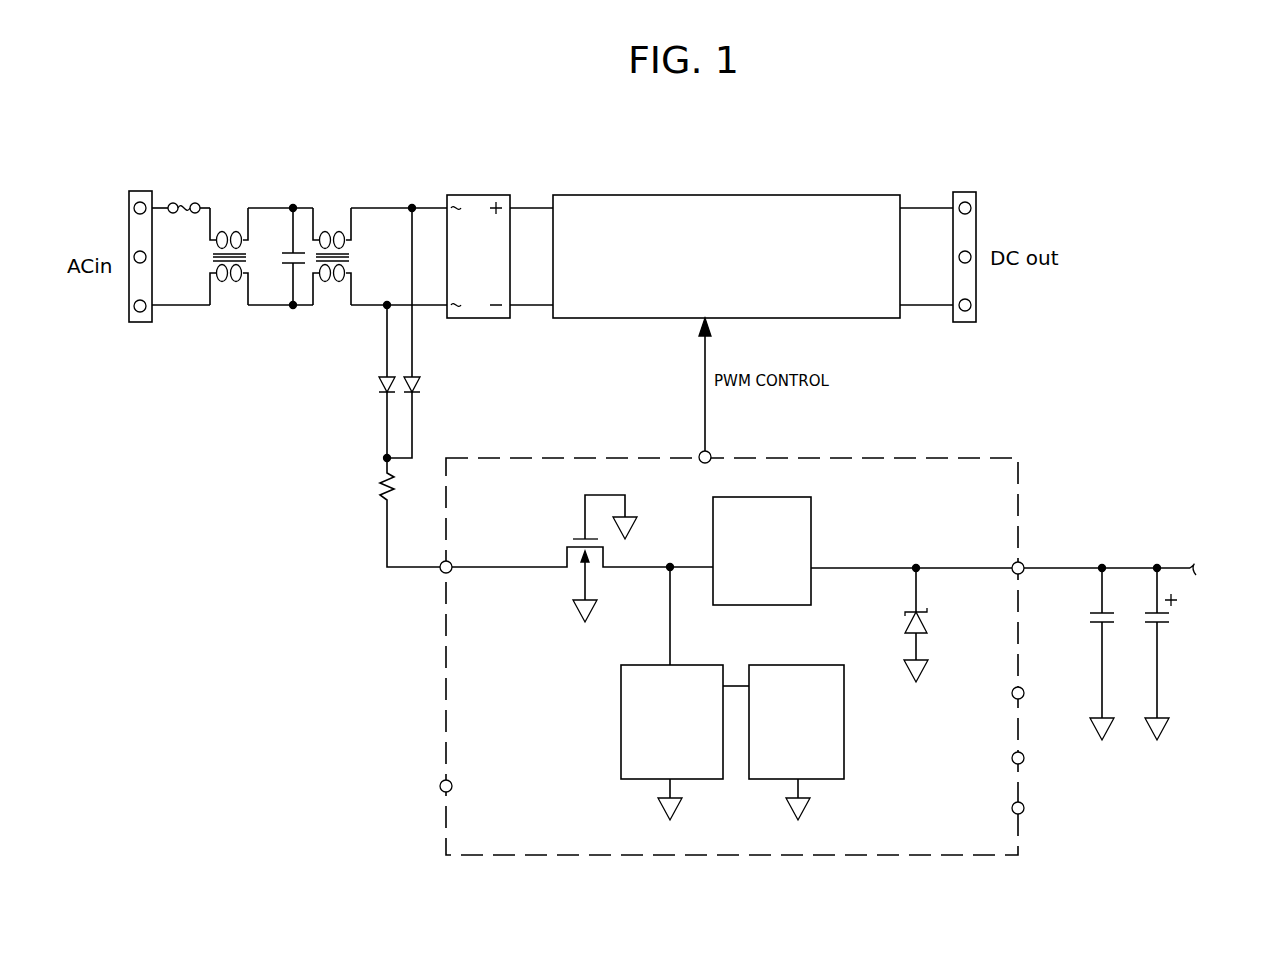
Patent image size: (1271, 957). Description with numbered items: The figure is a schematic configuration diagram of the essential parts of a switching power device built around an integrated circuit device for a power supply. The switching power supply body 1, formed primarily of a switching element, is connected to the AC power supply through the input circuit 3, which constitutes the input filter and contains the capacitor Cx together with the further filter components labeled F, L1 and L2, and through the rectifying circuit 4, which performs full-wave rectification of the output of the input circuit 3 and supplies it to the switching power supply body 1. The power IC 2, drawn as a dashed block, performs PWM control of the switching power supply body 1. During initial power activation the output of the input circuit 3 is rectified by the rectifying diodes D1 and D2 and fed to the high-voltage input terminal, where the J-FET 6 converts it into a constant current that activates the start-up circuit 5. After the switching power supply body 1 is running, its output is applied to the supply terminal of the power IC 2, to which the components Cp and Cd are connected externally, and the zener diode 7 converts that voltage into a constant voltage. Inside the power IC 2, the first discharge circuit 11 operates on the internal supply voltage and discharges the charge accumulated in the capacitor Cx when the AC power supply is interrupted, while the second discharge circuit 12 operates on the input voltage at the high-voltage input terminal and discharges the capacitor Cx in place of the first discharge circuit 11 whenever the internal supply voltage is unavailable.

The switching power supply body 1 is at (752, 208).
The integrated circuit device for a power supply 2 is at (908, 484).
The input circuit 3 is at (255, 298).
The rectifying circuit 4 is at (480, 320).
The start-up circuit 5 is at (792, 532).
The J-FET 6 is at (572, 580).
The zener diode 7 is at (905, 625).
The first discharge circuit 11 is at (621, 710).
The second discharge circuit 12 is at (845, 705).
The fuse F is at (179, 202).
The common mode choke coil L1 is at (236, 231).
The common mode choke coil L2 is at (336, 231).
The capacitor Cx is at (278, 266).
The rectifying diode D1 is at (421, 332).
The rectifying diode D2 is at (370, 380).
The capacitor Cp is at (1111, 653).
The capacitor Cd is at (1166, 653).